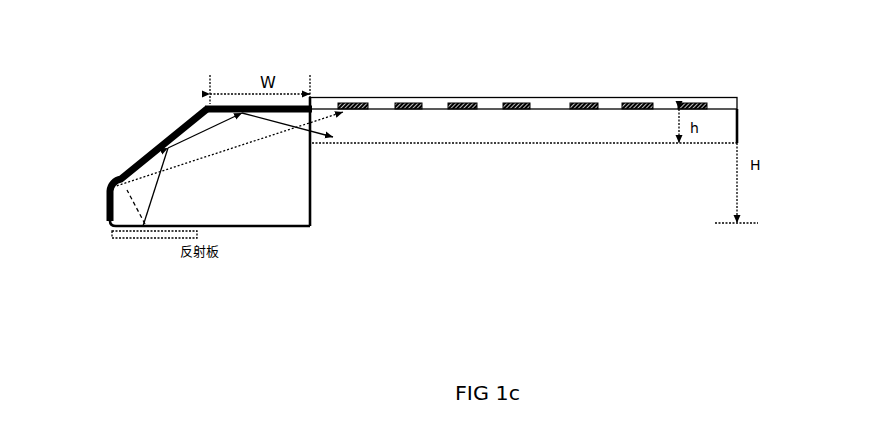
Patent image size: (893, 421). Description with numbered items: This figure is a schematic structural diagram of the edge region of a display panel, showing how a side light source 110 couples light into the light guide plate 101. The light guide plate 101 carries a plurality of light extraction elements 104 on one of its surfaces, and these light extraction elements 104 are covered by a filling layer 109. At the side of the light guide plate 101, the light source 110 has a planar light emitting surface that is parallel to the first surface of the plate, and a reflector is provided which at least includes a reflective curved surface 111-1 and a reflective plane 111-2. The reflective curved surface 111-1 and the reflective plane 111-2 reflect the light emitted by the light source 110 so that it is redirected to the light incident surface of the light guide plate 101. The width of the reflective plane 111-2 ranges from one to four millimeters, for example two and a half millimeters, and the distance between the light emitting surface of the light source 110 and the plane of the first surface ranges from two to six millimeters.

The light guide plate 101 is at (420, 143).
The light extraction elements 104 is at (472, 98).
The filling layer 109 is at (562, 98).
The light source 110 is at (163, 217).
The reflective curved surface 111-1 is at (133, 157).
The reflective plane 111-2 is at (238, 100).